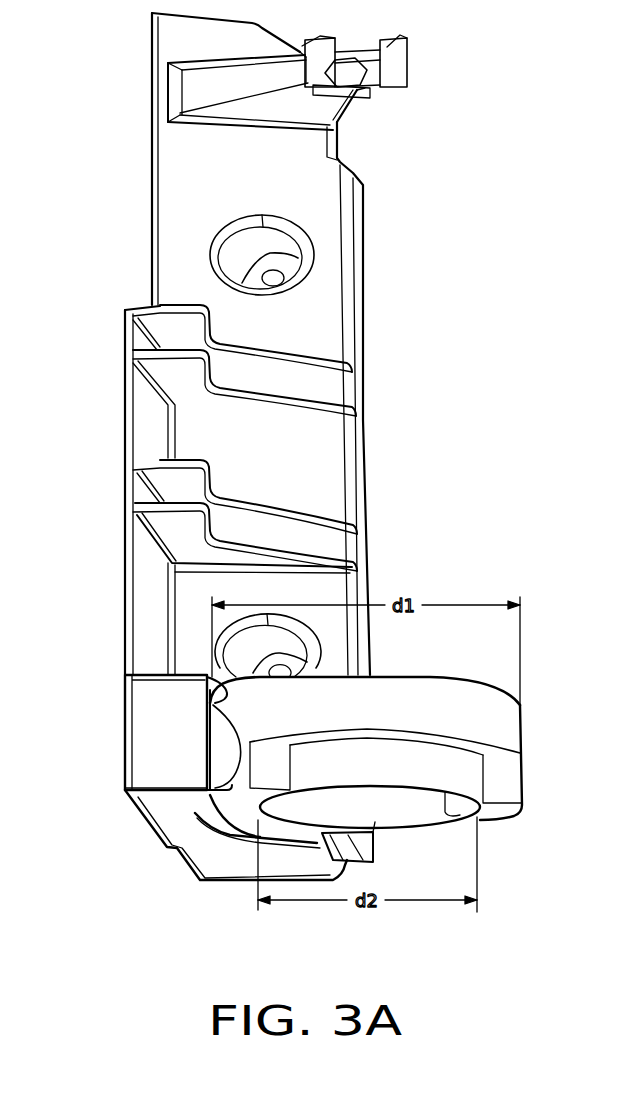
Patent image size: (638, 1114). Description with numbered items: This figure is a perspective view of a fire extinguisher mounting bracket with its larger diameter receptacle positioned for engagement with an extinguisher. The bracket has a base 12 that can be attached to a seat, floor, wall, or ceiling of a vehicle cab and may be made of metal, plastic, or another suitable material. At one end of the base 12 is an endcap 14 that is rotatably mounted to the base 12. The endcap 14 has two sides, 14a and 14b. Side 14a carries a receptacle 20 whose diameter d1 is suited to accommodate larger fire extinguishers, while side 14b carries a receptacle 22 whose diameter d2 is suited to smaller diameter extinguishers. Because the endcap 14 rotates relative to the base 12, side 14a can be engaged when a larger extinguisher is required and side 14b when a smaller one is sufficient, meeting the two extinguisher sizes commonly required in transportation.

The base 12 is at (158, 728).
The endcap 14 is at (386, 754).
The side 14a is at (433, 678).
The side 14b is at (417, 830).
The receptacle 20 is at (522, 732).
The receptacle 22 is at (383, 826).